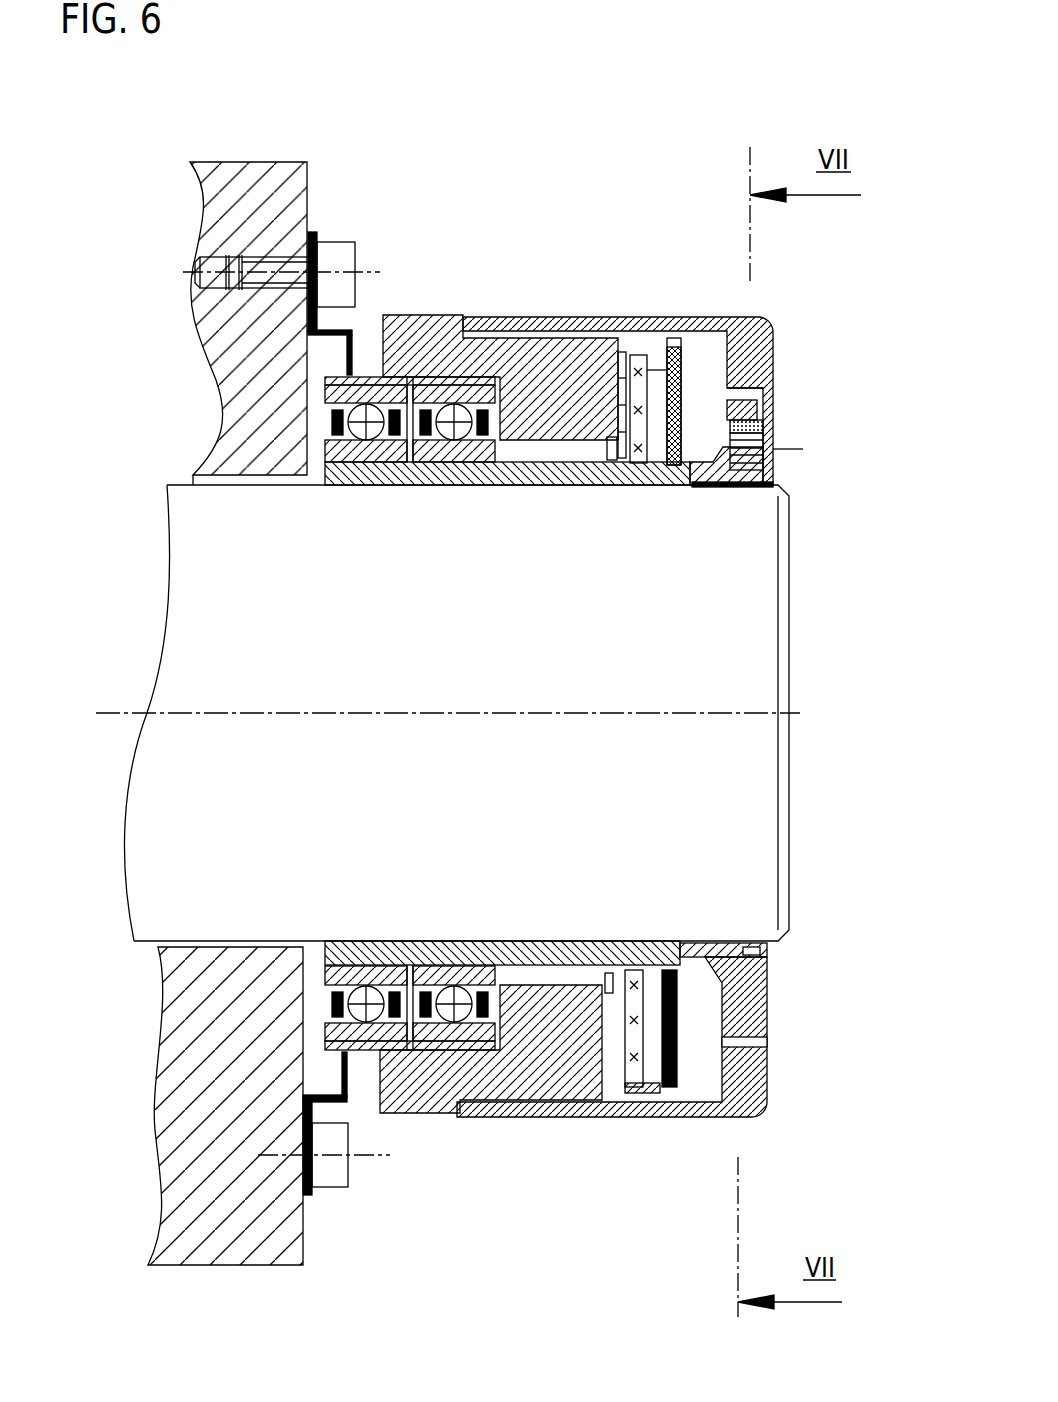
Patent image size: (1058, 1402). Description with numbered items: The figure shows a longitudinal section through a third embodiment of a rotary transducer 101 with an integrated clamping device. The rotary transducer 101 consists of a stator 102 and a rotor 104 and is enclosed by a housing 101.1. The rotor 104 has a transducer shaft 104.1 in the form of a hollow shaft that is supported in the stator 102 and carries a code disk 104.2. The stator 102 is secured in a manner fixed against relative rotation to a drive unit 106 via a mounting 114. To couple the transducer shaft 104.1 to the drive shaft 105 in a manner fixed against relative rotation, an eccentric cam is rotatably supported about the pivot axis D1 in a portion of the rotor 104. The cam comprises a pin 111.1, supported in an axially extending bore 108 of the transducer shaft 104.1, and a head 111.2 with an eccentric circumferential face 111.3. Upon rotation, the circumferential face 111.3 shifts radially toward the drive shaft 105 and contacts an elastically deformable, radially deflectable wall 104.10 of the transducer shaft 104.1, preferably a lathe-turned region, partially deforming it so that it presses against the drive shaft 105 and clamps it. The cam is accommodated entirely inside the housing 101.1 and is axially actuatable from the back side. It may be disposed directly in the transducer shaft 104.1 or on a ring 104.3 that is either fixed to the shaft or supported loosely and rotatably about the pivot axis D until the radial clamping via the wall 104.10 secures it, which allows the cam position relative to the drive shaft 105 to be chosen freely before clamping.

The rotary transducer 101 is at (574, 298).
The housing 101.1 is at (676, 323).
The stator 102 is at (440, 1112).
The rotor 104 is at (493, 492).
The transducer shaft 104.1 is at (413, 477).
The code disk 104.2 is at (627, 1112).
The ring 104.3 is at (690, 487).
The wall 104.10 is at (740, 488).
The drive shaft 105 is at (747, 638).
The drive unit 106 is at (302, 218).
The bore 108 is at (779, 352).
The pin 111.1 is at (776, 389).
The head 111.2 is at (779, 435).
The eccentric circumferential face 111.3 is at (780, 412).
The mounting 114 is at (352, 1097).
The pivot axis D is at (800, 715).
The pivot axis D1 is at (788, 450).